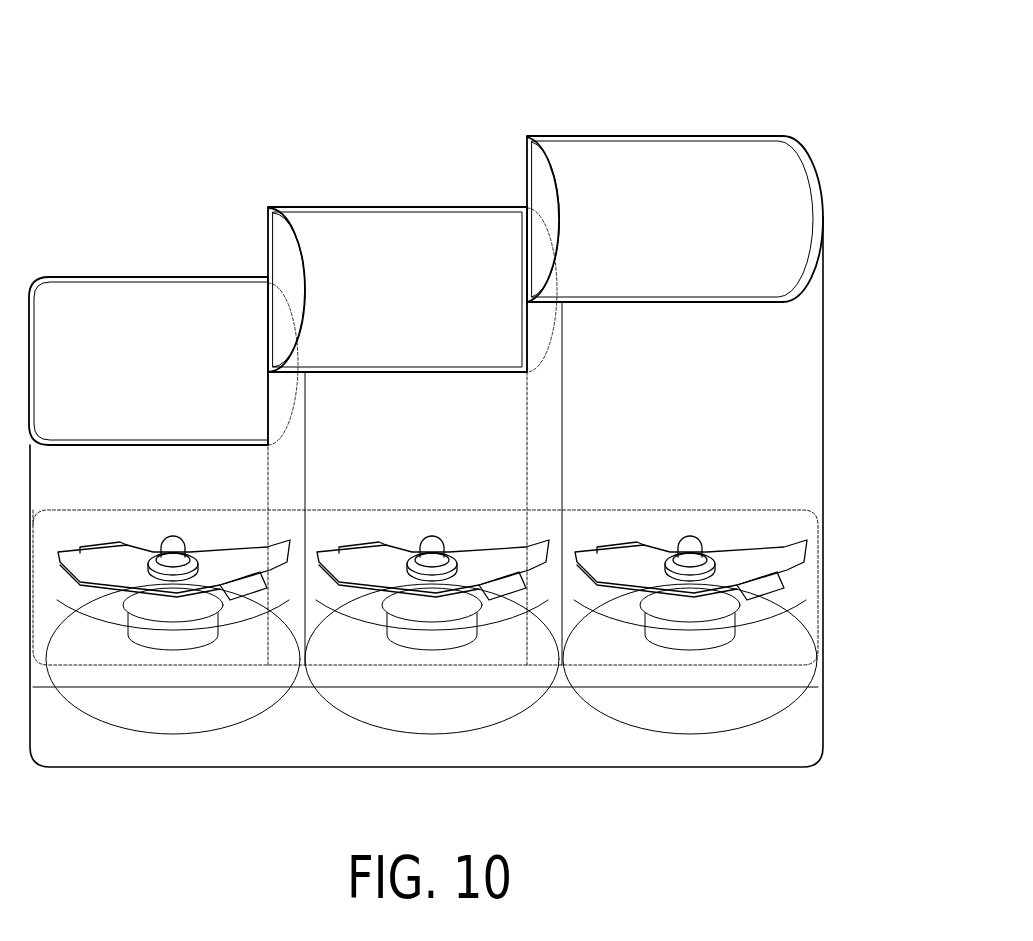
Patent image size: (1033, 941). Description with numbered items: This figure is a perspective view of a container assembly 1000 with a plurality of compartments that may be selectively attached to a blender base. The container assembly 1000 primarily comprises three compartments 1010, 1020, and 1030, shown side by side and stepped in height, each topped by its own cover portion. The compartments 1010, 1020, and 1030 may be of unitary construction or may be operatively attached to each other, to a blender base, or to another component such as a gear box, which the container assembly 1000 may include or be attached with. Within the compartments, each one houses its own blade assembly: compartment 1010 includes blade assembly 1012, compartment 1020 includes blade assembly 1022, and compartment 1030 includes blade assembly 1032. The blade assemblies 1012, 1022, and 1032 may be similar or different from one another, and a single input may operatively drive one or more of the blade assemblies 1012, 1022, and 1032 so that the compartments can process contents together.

The container assembly 1000 is at (462, 418).
The compartment 1010 is at (147, 310).
The compartment 1020 is at (398, 248).
The compartment 1030 is at (647, 182).
The blade assembly 1012 is at (175, 603).
The blade assembly 1022 is at (438, 603).
The blade assembly 1032 is at (698, 600).